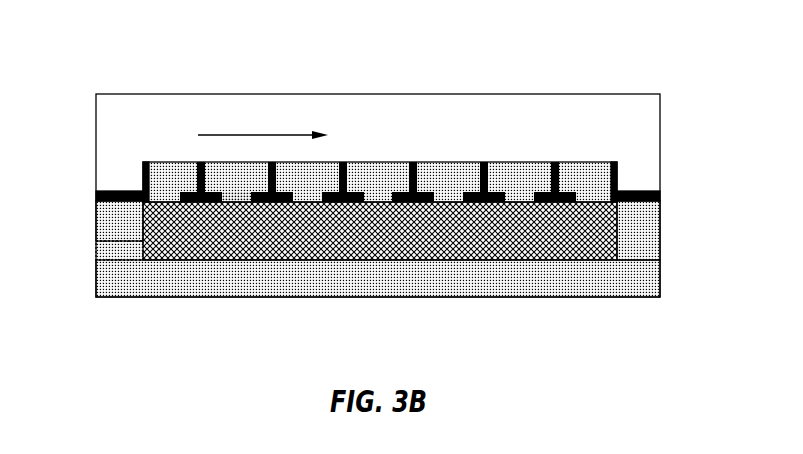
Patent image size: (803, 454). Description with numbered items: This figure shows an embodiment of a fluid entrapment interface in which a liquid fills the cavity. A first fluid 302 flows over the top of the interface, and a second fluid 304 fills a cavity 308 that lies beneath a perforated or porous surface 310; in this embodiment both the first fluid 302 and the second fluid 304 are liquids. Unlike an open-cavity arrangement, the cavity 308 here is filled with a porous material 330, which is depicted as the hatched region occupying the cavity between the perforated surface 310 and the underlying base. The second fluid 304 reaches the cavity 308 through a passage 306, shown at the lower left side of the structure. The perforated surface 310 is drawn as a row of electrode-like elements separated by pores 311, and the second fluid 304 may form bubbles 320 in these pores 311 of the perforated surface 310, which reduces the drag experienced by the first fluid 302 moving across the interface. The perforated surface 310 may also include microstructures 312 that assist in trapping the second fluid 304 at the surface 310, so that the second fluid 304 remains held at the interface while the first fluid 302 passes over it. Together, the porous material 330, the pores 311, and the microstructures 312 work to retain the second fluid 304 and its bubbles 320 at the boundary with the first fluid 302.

The first fluid 302 is at (163, 112).
The second fluid 304 is at (432, 240).
The passage 306 is at (100, 252).
The cavity 308 is at (310, 237).
The perforated or porous surface 310 is at (353, 188).
The pores 311 is at (250, 183).
The microstructures 312 is at (498, 172).
The bubbles 320 is at (447, 173).
The porous material 330 is at (592, 239).